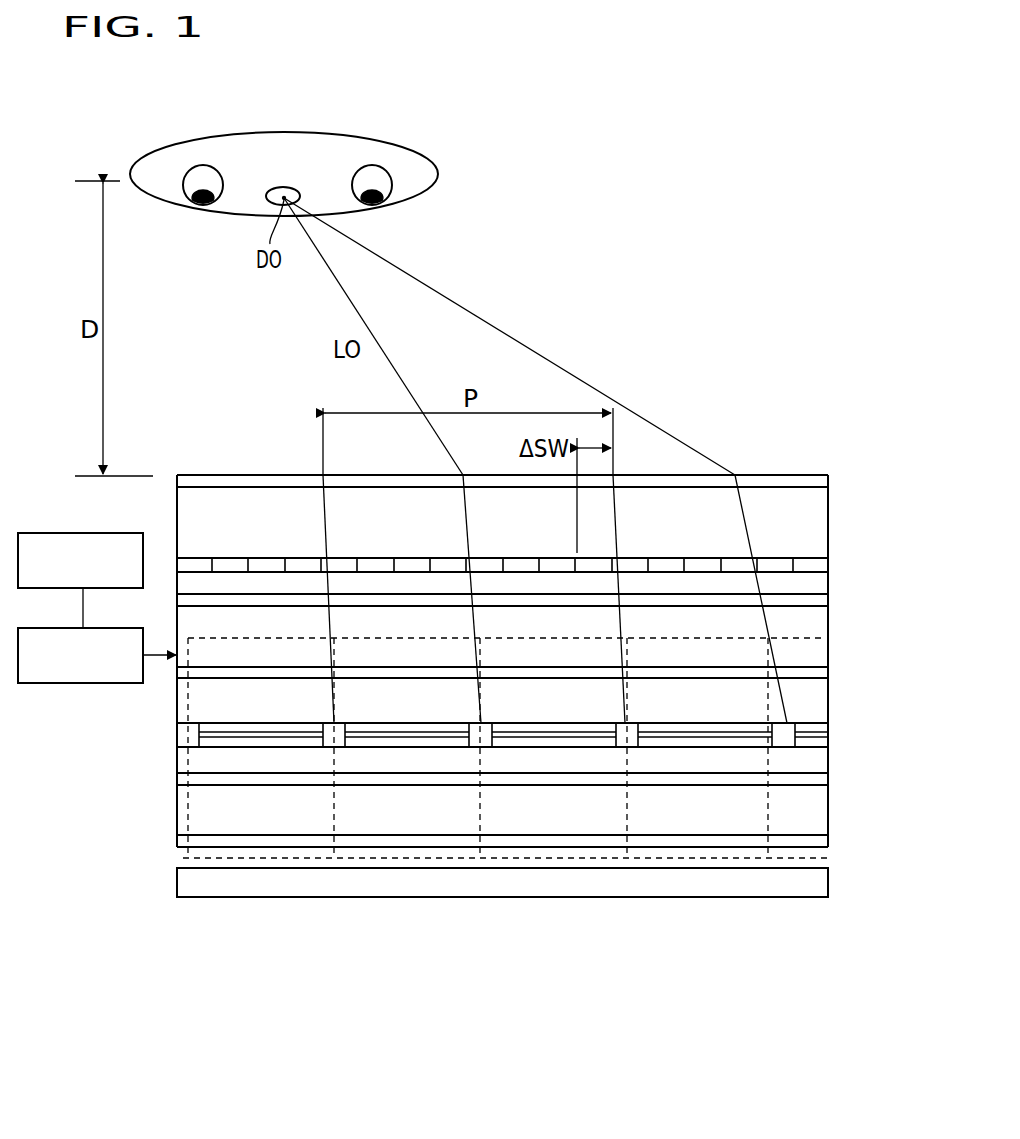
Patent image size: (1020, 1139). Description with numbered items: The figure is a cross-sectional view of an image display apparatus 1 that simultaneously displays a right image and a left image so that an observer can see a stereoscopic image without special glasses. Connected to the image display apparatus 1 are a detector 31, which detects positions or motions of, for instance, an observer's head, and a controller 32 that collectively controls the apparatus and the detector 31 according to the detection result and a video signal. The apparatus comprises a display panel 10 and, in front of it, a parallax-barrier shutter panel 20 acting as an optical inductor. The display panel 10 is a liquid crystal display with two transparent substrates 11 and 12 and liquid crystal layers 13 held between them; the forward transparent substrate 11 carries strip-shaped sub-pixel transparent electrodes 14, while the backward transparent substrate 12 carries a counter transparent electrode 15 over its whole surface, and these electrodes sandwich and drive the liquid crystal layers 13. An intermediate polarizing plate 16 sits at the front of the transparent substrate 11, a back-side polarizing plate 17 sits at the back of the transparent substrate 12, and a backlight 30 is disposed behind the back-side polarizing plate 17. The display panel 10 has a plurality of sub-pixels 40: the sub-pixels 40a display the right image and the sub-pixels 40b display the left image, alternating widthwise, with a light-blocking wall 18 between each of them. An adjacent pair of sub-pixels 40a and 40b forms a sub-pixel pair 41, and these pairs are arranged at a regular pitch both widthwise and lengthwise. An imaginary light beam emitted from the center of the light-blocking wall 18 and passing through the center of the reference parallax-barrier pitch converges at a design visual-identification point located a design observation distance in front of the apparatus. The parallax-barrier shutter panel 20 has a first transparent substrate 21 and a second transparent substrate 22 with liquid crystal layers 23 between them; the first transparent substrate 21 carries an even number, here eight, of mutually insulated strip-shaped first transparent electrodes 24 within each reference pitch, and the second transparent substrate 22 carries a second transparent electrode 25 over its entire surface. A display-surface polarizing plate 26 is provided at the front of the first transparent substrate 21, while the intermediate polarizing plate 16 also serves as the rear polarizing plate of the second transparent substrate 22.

The image display apparatus 1 is at (802, 451).
The display panel 10 is at (893, 668).
The transparent substrate 11 is at (817, 704).
The transparent substrate 12 is at (817, 812).
The liquid crystal layers 13 is at (817, 758).
The sub-pixel transparent electrodes 14 is at (817, 738).
The counter transparent electrode 15 is at (817, 779).
The intermediate polarizing plate 16 is at (817, 672).
The back-side polarizing plate 17 is at (817, 841).
The light-blocking wall 18 is at (180, 736).
The parallax-barrier shutter panel 20 is at (893, 476).
The first transparent substrate 21 is at (817, 520).
The second transparent substrate 22 is at (817, 644).
The liquid crystal layers 23 is at (817, 583).
The first transparent electrodes 24 is at (817, 566).
The second transparent electrode 25 is at (817, 600).
The display-surface polarizing plate 26 is at (817, 481).
The backlight 30 is at (817, 880).
The detector 31 is at (127, 532).
The controller 32 is at (127, 627).
The sub-pixels 40 is at (505, 808).
The sub-pixels 40a is at (679, 912).
The sub-pixels 40b is at (790, 912).
The sub-pixel pair 41 is at (548, 976).